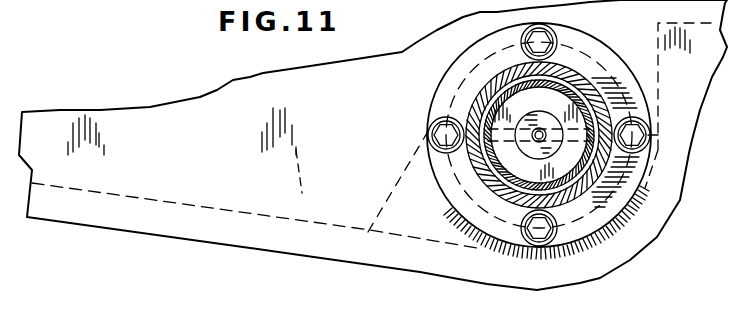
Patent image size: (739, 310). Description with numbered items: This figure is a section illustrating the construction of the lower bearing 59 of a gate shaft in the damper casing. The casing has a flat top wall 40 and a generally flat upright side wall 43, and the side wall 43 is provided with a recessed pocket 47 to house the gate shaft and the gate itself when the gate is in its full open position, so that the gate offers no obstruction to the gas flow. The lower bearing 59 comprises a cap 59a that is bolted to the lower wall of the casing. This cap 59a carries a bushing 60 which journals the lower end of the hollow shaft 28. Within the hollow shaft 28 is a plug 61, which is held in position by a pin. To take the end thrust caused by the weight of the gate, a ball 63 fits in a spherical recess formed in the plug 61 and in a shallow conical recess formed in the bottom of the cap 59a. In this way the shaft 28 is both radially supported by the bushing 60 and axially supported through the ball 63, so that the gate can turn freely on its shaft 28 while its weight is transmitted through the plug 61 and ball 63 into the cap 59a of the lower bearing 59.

The top wall 40 is at (373, 145).
The side wall 43 is at (163, 220).
The recessed pocket 47 is at (613, 233).
The lower bearing 59 is at (432, 88).
The cap 59a is at (607, 100).
The bushing 60 is at (492, 173).
The shaft 28 is at (498, 155).
The plug 61 is at (550, 122).
The ball 63 is at (540, 127).